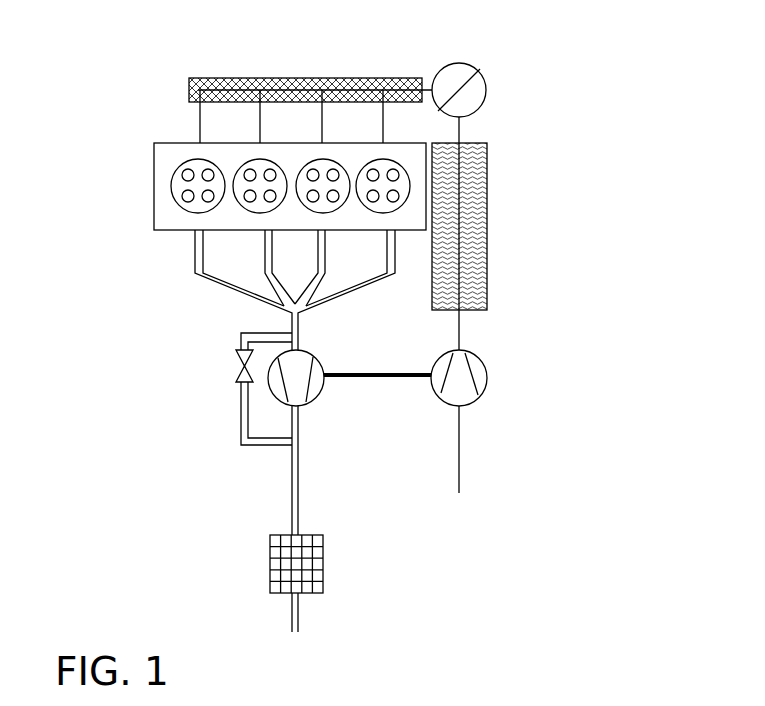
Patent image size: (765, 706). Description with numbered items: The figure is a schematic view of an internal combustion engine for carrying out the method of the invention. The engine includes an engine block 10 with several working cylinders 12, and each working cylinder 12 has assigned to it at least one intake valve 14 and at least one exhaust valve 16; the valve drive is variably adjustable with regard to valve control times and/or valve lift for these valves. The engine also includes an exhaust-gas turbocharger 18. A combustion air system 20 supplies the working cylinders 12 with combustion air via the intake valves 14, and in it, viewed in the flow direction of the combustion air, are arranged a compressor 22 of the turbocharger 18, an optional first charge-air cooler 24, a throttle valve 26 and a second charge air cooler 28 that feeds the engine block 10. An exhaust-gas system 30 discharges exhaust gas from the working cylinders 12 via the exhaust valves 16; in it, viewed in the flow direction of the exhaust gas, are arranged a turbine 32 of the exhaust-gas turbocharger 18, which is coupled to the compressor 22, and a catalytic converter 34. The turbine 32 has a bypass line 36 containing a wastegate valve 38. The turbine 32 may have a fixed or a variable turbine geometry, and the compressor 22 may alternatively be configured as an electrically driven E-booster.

The engine block 10 is at (319, 180).
The working cylinder 12 is at (158, 221).
The intake valve 14 is at (155, 163).
The exhaust valve 16 is at (155, 197).
The exhaust-gas turbocharger 18 is at (380, 375).
The combustion air system 20 is at (554, 210).
The compressor 22 is at (478, 381).
The first charge-air cooler 24 is at (471, 277).
The throttle valve 26 is at (475, 87).
The second charge air cooler 28 is at (352, 85).
The exhaust-gas system 30 is at (159, 344).
The turbine 32 is at (317, 380).
The catalytic converter 34 is at (323, 552).
The bypass line 36 is at (243, 423).
The wastegate valve 38 is at (243, 370).